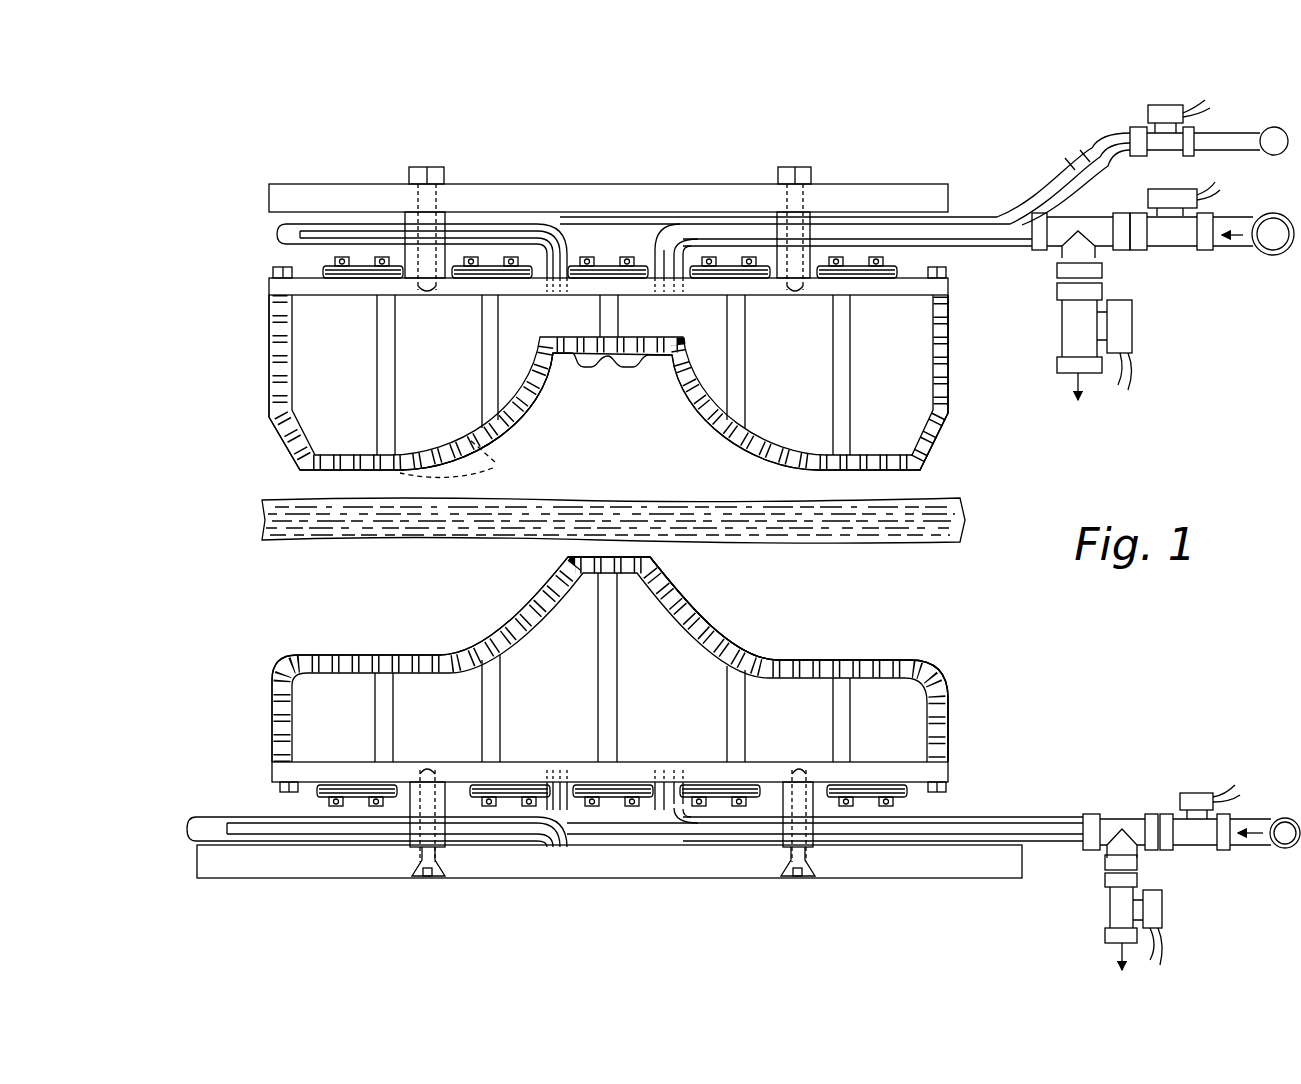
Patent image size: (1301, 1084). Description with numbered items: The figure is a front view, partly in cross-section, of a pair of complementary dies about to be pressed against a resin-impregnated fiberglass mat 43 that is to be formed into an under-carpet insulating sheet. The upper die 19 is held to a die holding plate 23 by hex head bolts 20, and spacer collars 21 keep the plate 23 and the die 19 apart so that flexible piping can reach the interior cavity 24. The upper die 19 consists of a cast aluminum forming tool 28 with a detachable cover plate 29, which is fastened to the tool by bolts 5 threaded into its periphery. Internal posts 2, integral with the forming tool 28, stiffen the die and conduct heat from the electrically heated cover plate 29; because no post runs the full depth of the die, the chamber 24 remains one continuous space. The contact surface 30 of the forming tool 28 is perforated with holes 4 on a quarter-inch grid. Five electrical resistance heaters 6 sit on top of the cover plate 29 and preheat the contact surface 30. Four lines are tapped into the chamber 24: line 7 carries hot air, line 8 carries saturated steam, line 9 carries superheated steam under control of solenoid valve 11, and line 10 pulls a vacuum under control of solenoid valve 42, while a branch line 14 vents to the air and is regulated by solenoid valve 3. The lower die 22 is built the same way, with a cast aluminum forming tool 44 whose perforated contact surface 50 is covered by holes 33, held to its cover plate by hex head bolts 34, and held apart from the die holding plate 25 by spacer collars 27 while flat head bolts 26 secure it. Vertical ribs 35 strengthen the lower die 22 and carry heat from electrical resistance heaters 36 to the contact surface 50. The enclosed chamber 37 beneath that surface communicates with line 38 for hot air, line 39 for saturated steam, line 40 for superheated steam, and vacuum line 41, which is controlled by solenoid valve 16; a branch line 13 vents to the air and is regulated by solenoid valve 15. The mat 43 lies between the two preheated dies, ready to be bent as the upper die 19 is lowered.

The internal posts 2 is at (397, 367).
The solenoid valve 3 is at (1133, 329).
The holes 4 is at (455, 458).
The bolts 5 is at (275, 271).
The electrical resistance heaters 6 is at (330, 271).
The hot air line 7 is at (277, 229).
The saturated steam line 8 is at (298, 241).
The superheated steam line 9 is at (1071, 184).
The vacuum line 10 is at (1233, 253).
The solenoid valve 11 is at (1186, 113).
The vent line 13 is at (1137, 850).
The vent line 14 is at (1100, 256).
The solenoid valve 15 is at (1162, 910).
The solenoid valve 16 is at (1183, 795).
The upper die 19 is at (205, 347).
The hex head bolts 20 is at (440, 170).
The spacer collars 21 is at (440, 268).
The lower die 22 is at (246, 727).
The die holding plate 23 is at (269, 198).
The interior cavity 24 is at (449, 335).
The die holding plate 25 is at (197, 862).
The flat head bolts 26 is at (448, 870).
The spacer collars 27 is at (440, 787).
The forming tool 28 is at (950, 392).
The cover plate 29 is at (950, 290).
The contact surface 30 is at (512, 418).
The holes 33 is at (703, 630).
The hex head bolts 34 is at (280, 788).
The vertical posts or ribs 35 is at (478, 710).
The electrical resistance heaters 36 is at (358, 785).
The enclosed chamber 37 is at (564, 703).
The hot air line 38 is at (187, 815).
The saturated steam line 39 is at (235, 818).
The superheated steam line 40 is at (1025, 818).
The vacuum line 41 is at (1262, 820).
The solenoid valve 42 is at (1149, 190).
The mat 43 is at (962, 517).
The forming tool 44 is at (950, 743).
The contact surface 50 is at (745, 640).